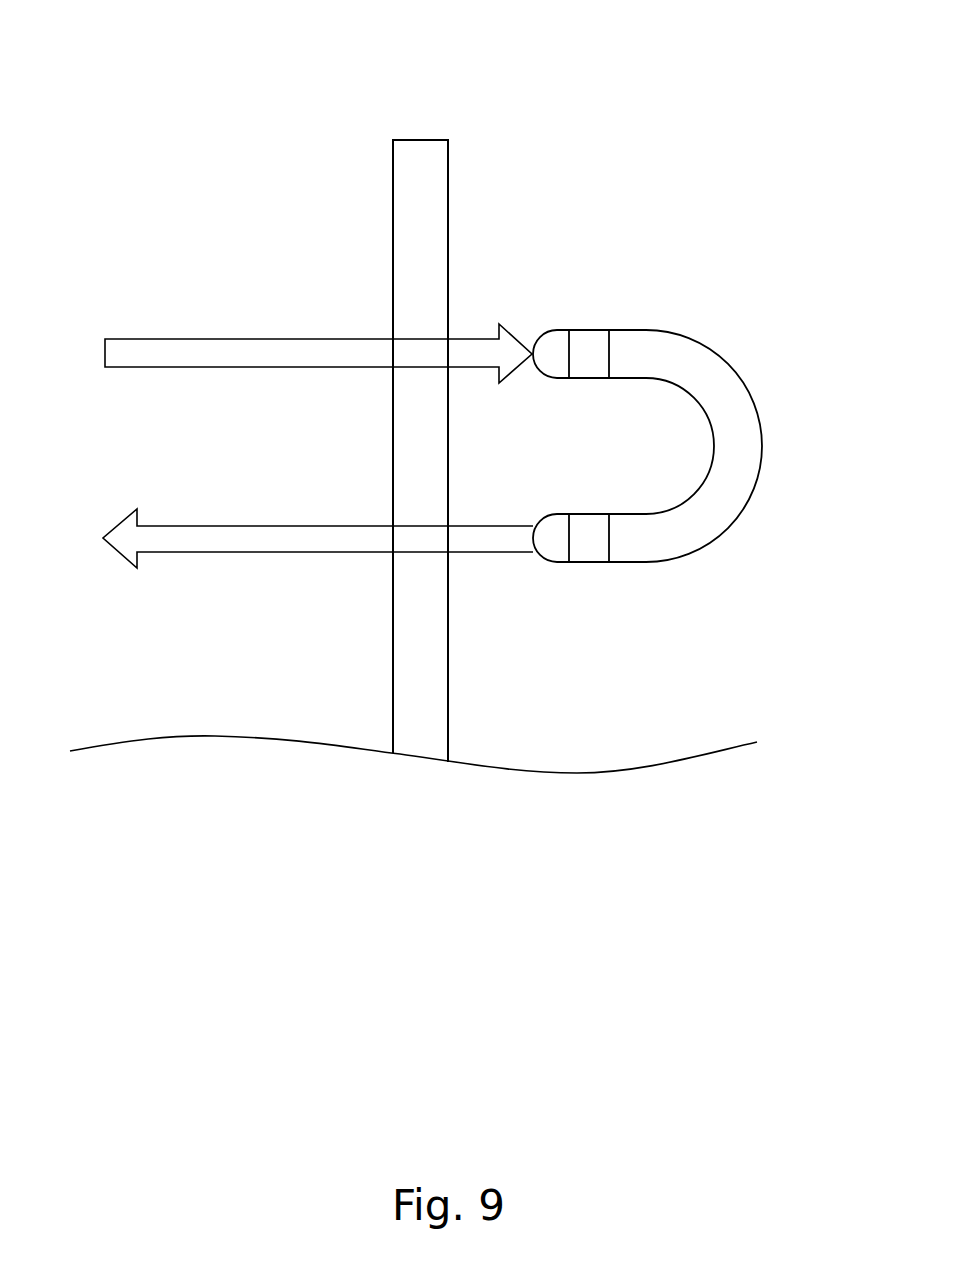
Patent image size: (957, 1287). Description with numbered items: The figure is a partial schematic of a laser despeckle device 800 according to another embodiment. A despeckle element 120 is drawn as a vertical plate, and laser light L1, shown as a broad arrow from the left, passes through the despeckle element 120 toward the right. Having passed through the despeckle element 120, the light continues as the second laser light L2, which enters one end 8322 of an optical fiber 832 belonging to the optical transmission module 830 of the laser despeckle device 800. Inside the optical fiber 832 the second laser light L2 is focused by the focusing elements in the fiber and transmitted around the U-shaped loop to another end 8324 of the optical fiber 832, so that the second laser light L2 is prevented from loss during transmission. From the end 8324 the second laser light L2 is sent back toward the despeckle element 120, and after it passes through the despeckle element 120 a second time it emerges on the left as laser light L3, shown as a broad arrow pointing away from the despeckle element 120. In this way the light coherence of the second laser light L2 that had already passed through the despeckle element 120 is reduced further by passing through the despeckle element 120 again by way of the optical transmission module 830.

The laser despeckle device 800 is at (60, 33).
The despeckle element 120 is at (419, 148).
The optical transmission module 830 is at (734, 171).
The optical fiber 832 is at (694, 341).
The one end of the optical fiber 8322 is at (553, 336).
The another end of the optical fiber 8324 is at (558, 553).
The laser light L1 is at (173, 344).
The second laser light L2 is at (485, 342).
The laser light L3 is at (198, 531).